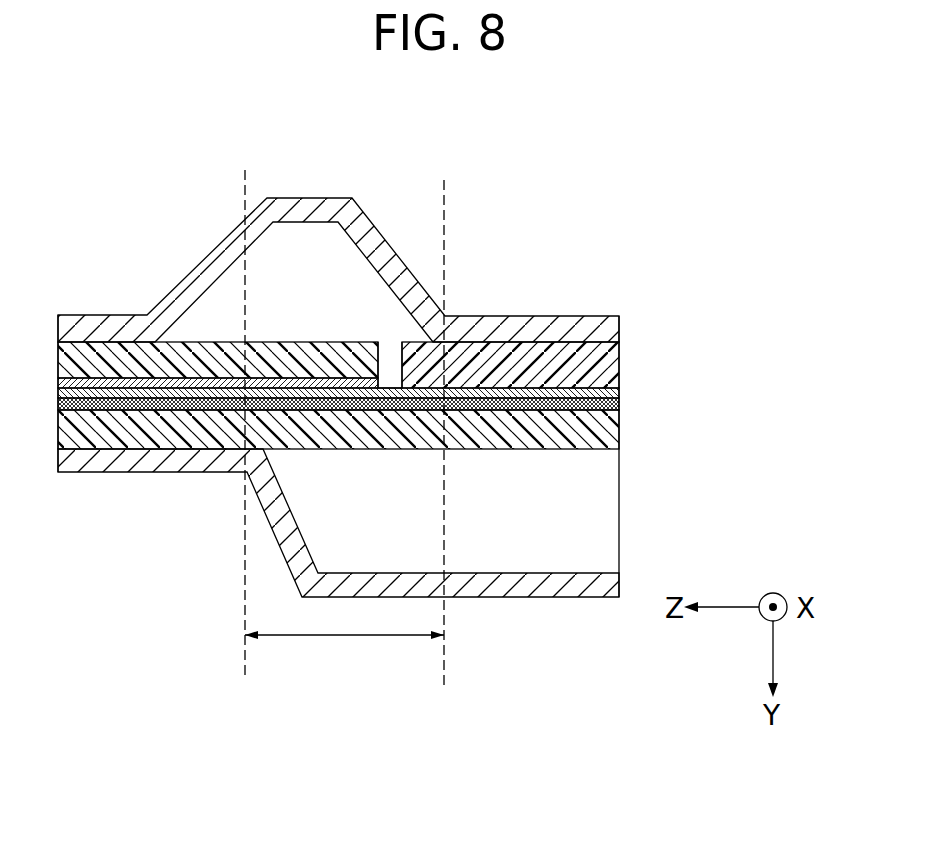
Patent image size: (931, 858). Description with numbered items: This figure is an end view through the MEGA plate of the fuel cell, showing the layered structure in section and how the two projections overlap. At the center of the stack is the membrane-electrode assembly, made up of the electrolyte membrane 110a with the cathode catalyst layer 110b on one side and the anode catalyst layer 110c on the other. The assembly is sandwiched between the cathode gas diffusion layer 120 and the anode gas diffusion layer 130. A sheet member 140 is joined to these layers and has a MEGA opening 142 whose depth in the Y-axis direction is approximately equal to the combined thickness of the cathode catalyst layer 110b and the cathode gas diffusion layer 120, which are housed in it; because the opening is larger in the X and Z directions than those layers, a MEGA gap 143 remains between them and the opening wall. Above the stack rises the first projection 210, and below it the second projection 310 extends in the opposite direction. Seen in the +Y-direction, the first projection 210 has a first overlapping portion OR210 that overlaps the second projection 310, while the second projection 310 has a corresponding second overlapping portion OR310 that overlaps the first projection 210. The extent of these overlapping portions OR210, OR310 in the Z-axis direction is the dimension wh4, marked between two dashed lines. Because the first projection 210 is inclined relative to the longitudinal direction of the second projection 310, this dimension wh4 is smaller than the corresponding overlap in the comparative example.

The first projection 210 is at (223, 260).
The first overlapping portion OR210 is at (295, 298).
The MEGA opening 142 is at (435, 343).
The MEGA gap 143 is at (390, 363).
The cathode gas diffusion layer 120 is at (98, 350).
The sheet member 140 is at (620, 363).
The electrolyte membrane 110a is at (620, 395).
The cathode catalyst layer 110b is at (130, 385).
The anode catalyst layer 110c is at (620, 412).
The anode gas diffusion layer 130 is at (212, 412).
The second projection 310 is at (300, 563).
The second overlapping portion OR310 is at (397, 529).
The dimension wh4 is at (323, 637).